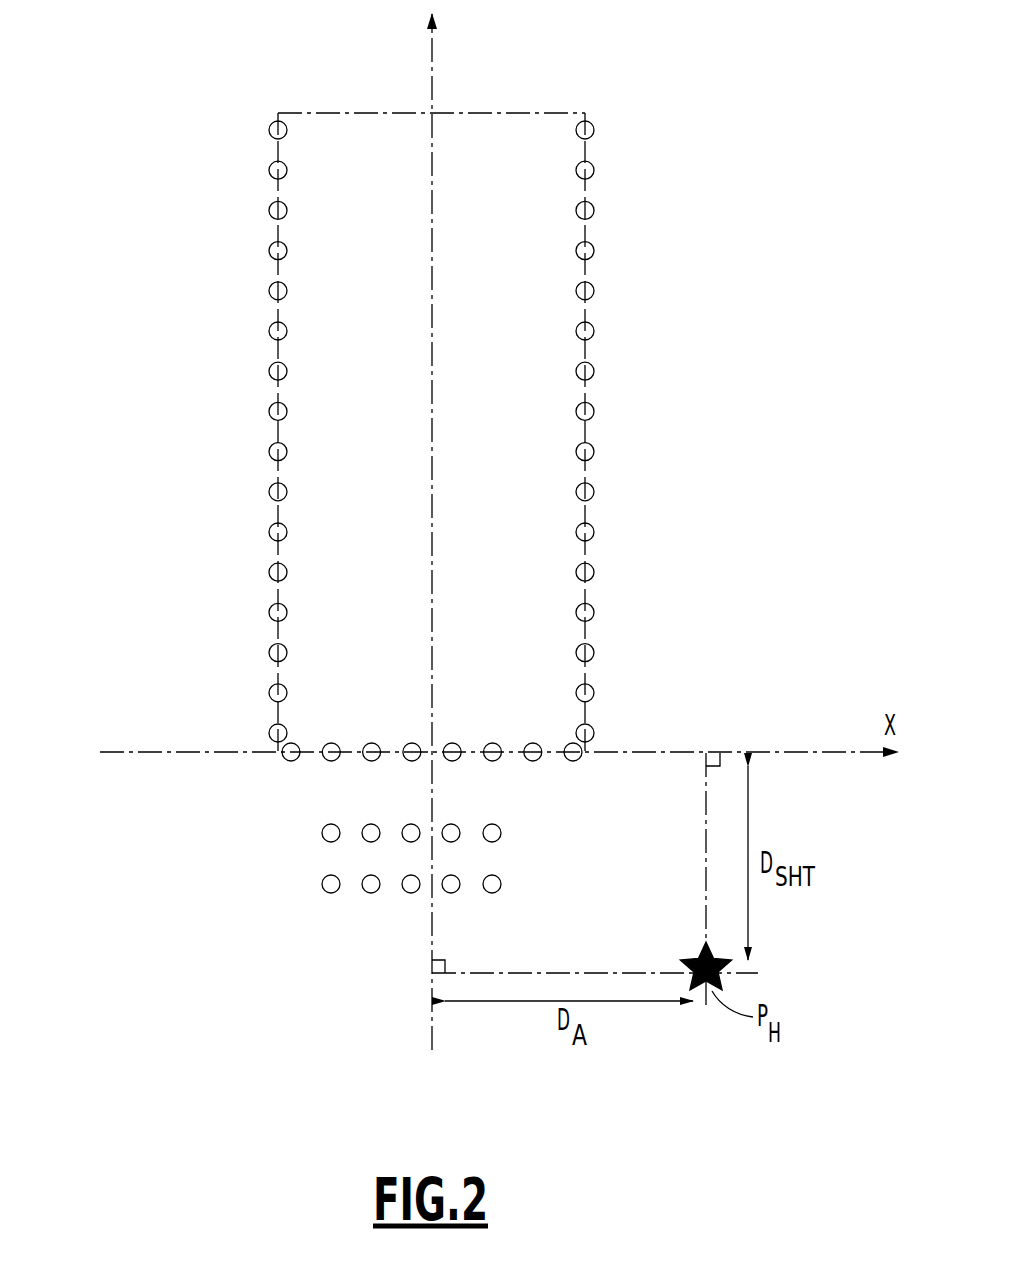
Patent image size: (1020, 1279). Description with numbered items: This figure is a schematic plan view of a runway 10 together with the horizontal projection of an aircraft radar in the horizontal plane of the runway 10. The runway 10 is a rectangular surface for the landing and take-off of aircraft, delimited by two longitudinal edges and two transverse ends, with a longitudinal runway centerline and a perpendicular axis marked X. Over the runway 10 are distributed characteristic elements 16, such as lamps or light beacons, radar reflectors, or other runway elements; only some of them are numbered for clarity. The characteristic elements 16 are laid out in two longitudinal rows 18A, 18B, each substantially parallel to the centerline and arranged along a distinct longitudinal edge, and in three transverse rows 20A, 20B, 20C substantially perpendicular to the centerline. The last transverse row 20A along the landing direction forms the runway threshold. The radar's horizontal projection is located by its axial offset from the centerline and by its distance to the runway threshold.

The runway 10 is at (120, 568).
The characteristic elements 16 is at (270, 210).
The longitudinal row 18A is at (204, 278).
The longitudinal row 18B is at (622, 258).
The transverse row 20A is at (275, 762).
The transverse row 20B is at (307, 835).
The transverse row 20C is at (335, 898).